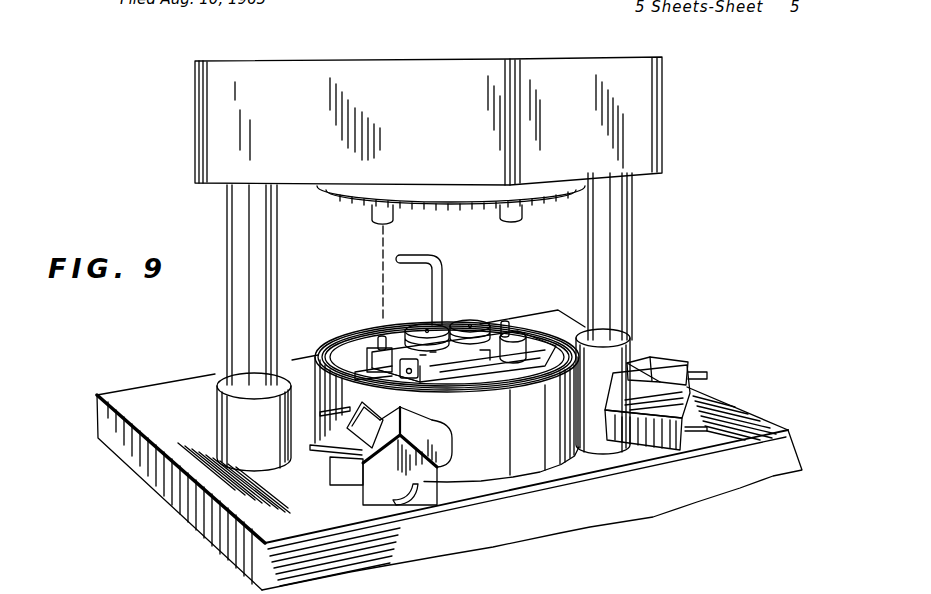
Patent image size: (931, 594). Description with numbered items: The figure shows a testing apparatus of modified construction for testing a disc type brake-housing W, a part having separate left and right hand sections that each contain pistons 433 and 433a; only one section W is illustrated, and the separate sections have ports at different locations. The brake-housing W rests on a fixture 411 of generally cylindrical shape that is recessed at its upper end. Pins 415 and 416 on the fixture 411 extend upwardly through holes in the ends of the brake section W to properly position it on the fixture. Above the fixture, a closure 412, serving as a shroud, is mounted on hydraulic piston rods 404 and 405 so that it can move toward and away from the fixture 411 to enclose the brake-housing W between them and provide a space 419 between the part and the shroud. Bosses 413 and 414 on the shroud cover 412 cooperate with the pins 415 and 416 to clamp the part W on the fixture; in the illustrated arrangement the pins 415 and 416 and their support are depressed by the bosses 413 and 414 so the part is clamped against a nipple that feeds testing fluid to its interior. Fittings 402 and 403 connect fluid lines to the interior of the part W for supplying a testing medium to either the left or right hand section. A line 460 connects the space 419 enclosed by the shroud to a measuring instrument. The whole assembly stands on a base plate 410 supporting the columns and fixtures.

The fitting 402 is at (425, 500).
The fitting 403 is at (662, 433).
The hydraulic piston rod 404 is at (228, 231).
The hydraulic piston rod 405 is at (632, 245).
The base plate 410 is at (218, 513).
The fixture 411 is at (535, 465).
The closure 412 is at (197, 176).
The boss 413 is at (383, 225).
The boss 414 is at (511, 222).
The pin 415 is at (354, 273).
The pin 416 is at (502, 320).
The space 419 is at (492, 375).
The piston 433 is at (427, 324).
The piston 433a is at (462, 320).
The line 460 is at (424, 250).
The brake-housing W is at (528, 350).